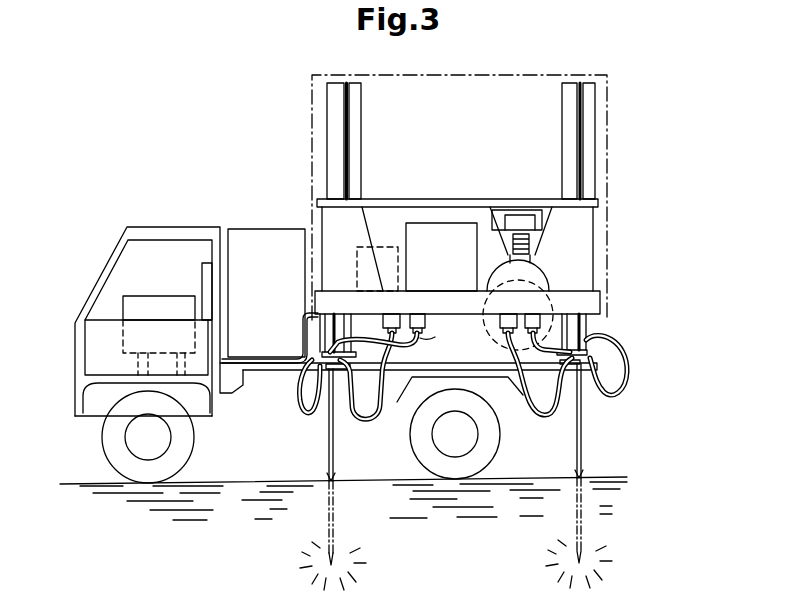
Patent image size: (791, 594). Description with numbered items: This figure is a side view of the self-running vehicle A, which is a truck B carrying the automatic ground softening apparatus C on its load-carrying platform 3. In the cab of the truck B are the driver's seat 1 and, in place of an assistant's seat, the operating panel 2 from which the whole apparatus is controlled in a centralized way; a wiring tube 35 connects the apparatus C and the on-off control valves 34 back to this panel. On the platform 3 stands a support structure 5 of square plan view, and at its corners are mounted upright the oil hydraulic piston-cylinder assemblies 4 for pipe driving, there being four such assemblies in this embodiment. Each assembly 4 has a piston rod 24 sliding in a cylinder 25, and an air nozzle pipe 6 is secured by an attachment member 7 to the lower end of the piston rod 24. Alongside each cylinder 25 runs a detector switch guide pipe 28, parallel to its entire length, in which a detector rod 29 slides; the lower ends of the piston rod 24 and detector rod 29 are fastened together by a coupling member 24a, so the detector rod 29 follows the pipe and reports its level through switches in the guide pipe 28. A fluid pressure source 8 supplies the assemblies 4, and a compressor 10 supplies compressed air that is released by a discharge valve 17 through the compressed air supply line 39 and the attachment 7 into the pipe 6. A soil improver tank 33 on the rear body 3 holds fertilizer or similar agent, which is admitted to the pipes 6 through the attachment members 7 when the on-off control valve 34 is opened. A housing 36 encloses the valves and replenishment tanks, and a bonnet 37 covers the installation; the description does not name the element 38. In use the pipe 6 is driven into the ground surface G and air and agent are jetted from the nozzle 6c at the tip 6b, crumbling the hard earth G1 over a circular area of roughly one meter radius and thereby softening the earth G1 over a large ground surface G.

The self-running vehicle A is at (228, 104).
The truck B is at (148, 232).
The automatic ground softening apparatus C is at (655, 110).
The driver's seat 1 is at (205, 262).
The operating panel 2 is at (132, 300).
The load-carrying platform 3 is at (370, 368).
The oil hydraulic piston-cylinder assembly 4 is at (456, 141).
The support structure 5 is at (597, 216).
The air nozzle pipe 6 is at (462, 457).
The tip 6b is at (330, 480).
The nozzle 6c is at (334, 480).
The attachment member 7 is at (331, 372).
The fluid pressure source 8 is at (383, 247).
The compressor 10 is at (520, 258).
The discharge valve 17 is at (506, 323).
The piston rod 24 is at (332, 332).
The coupling member 24a is at (304, 365).
The cylinder 25 is at (330, 143).
The detector switch guide pipe 28 is at (352, 110).
The detector rod 29 is at (345, 314).
The soil improver tank 33 is at (265, 240).
The on-off control valve 34 is at (393, 314).
The wiring tube 35 is at (255, 360).
The housing 36 is at (441, 240).
The bonnet 37 is at (490, 76).
The hose loop 38 is at (362, 365).
The compressed air supply line 39 is at (378, 385).
The ground surface G is at (217, 483).
The hard earth G1 is at (518, 517).